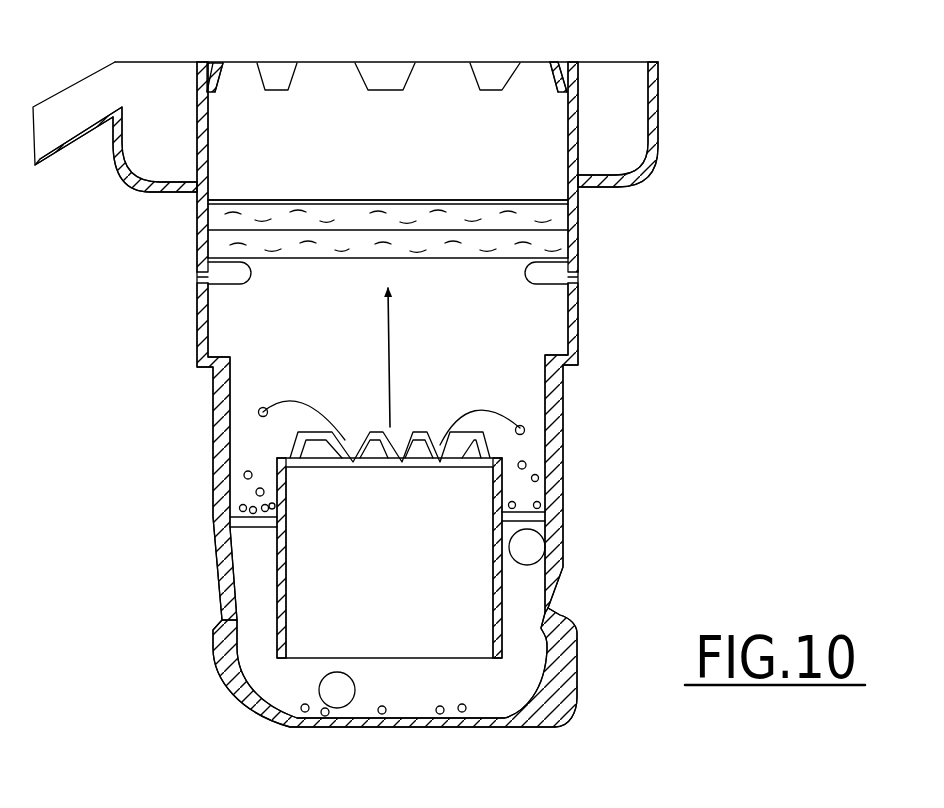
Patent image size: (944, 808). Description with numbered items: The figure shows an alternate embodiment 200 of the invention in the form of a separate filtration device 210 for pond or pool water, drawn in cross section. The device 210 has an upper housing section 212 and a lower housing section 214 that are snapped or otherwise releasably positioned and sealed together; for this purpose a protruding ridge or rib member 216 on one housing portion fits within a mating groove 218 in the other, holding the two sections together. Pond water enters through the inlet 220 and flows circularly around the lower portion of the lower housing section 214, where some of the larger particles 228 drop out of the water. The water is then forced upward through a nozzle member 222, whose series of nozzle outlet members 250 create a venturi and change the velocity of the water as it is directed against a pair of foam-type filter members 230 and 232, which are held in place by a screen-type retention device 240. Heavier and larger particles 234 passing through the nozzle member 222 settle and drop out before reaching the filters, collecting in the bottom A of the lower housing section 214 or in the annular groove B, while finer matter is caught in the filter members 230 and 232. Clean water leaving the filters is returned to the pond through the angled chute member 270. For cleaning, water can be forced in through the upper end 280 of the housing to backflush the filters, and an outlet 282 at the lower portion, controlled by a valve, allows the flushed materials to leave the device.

The alternate embodiment 200 is at (696, 324).
The filtration device 210 is at (205, 397).
The upper housing section 212 is at (578, 234).
The lower housing section 214 is at (555, 590).
The protruding ridge or rib member 216 is at (225, 470).
The mating groove 218 is at (240, 453).
The inlet 220 is at (543, 542).
The nozzle member 222 is at (393, 427).
The larger particles 228 is at (387, 713).
The foam-type filter member 230 is at (428, 258).
The foam-type filter member 232 is at (353, 217).
The heavier and larger particles 234 is at (524, 464).
The screen-type retention device 240 is at (473, 200).
The nozzle outlet members 250 is at (418, 457).
The chute member 270 is at (77, 117).
The upper end 280 is at (318, 88).
The outlet 282 is at (253, 712).
The bottom A is at (410, 713).
The circular groove B is at (527, 508).